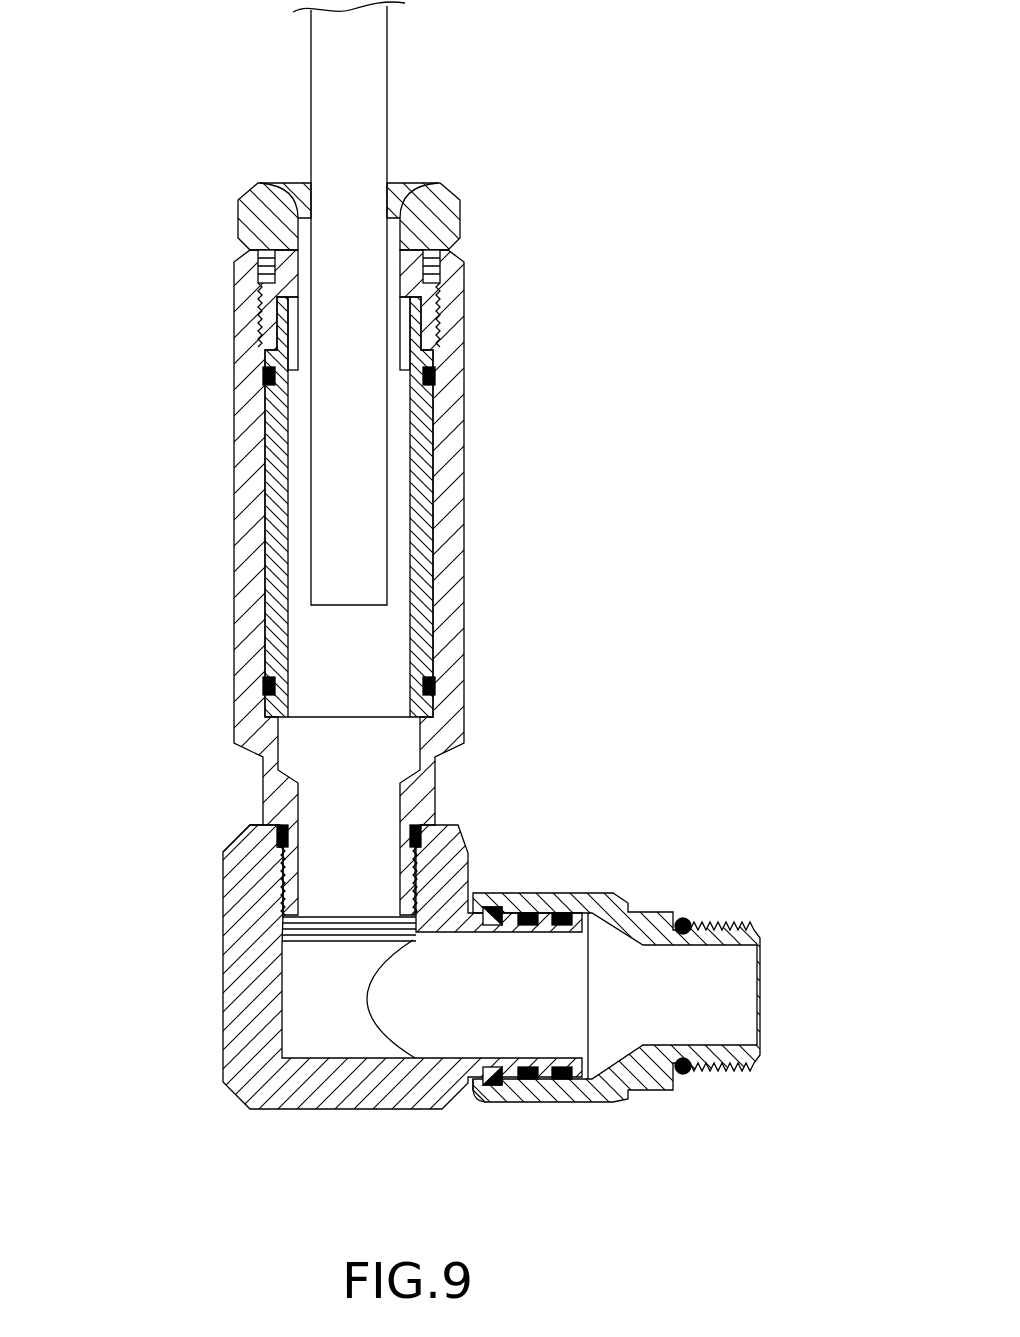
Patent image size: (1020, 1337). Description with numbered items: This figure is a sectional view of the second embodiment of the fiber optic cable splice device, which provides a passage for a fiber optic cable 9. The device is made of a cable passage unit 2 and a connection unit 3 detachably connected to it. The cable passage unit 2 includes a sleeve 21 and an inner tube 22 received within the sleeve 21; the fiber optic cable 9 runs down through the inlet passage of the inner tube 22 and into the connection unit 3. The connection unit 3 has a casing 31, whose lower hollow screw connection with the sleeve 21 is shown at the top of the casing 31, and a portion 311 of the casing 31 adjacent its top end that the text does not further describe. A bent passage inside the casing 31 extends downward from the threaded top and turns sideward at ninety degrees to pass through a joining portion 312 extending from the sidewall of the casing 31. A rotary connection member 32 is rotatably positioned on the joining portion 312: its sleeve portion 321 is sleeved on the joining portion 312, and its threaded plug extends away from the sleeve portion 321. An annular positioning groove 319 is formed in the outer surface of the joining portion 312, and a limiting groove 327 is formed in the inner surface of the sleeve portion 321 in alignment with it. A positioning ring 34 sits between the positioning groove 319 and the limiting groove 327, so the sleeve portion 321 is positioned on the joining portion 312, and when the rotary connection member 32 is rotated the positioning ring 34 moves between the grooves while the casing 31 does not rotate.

The fiber optic cable 9 is at (375, 47).
The cable passage unit 2 is at (336, 503).
The sleeve 21 is at (200, 499).
The inner tube 22 is at (447, 569).
The connection unit 3 is at (339, 1002).
The casing 31 is at (205, 1044).
The body top portion 311 is at (223, 888).
The joining portion 312 is at (580, 1082).
The rotary connection member 32 is at (605, 983).
The sleeve portion 321 is at (582, 893).
The positioning groove 319 is at (497, 905).
The positioning ring 34 is at (500, 1085).
The limiting groove 327 is at (475, 1068).